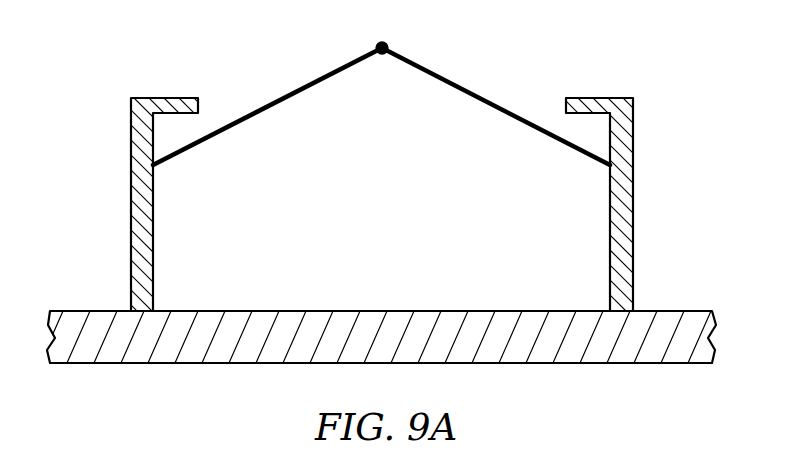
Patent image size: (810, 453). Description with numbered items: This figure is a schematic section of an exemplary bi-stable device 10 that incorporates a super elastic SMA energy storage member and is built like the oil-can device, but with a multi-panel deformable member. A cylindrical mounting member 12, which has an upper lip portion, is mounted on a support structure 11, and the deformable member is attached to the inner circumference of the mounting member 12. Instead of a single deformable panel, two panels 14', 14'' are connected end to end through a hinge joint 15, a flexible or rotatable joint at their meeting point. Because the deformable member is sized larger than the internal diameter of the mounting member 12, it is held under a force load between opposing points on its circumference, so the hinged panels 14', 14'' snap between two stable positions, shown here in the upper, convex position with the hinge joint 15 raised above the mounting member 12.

The bi-stable device 10 is at (655, 60).
The support structure 11 is at (105, 365).
The mounting member 12 is at (131, 190).
The panel 14' is at (267, 99).
The panel 14'' is at (496, 101).
The hinge joint 15 is at (386, 44).